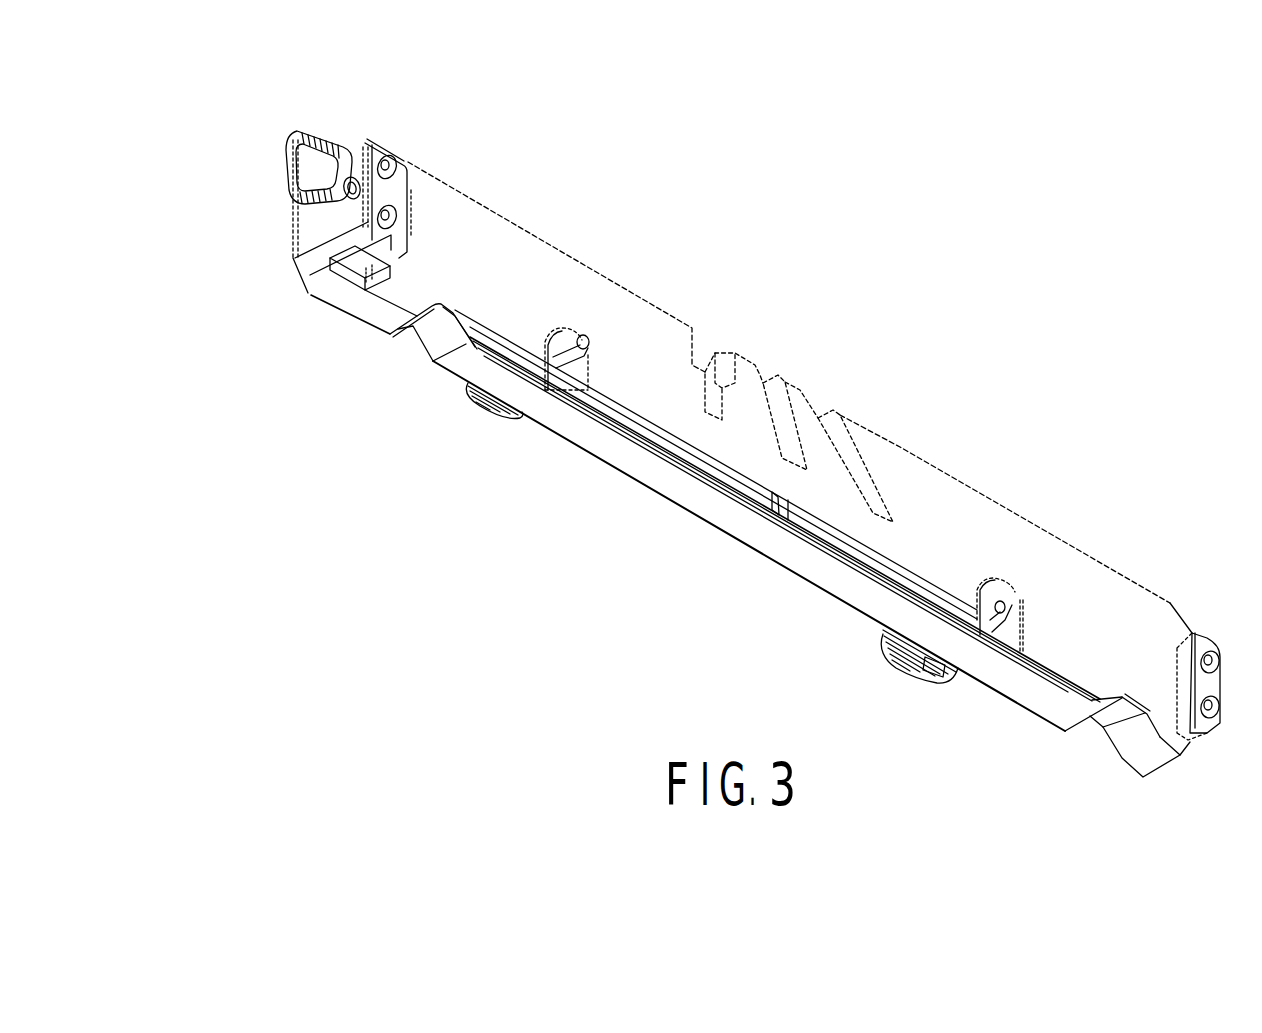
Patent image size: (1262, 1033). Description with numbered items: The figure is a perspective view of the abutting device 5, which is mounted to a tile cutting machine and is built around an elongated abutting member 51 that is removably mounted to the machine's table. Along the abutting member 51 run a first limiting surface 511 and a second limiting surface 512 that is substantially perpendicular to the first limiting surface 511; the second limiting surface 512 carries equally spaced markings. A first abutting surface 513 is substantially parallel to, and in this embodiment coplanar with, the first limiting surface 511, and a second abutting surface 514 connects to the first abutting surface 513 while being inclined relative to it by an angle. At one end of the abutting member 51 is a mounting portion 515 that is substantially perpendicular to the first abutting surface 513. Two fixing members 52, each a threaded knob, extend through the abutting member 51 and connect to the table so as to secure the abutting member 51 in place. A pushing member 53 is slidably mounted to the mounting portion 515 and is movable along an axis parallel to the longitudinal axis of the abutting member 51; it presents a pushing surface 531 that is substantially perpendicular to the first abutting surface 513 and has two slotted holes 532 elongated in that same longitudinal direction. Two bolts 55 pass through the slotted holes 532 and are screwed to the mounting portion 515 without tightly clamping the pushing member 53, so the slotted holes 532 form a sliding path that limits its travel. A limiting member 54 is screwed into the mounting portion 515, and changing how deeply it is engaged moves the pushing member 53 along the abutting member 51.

The abutting device 5 is at (255, 143).
The abutting member 51 is at (1171, 603).
The first limiting surface 511 is at (652, 322).
The second limiting surface 512 is at (921, 458).
The first abutting surface 513 is at (642, 385).
The second abutting surface 514 is at (1187, 680).
The mounting portion 515 is at (328, 270).
The fixing member 52 is at (490, 415).
The pushing member 53 is at (407, 207).
The pushing surface 531 is at (374, 312).
The slotted hole 532 is at (381, 146).
The limiting member 54 is at (312, 138).
The bolt 55 is at (397, 165).